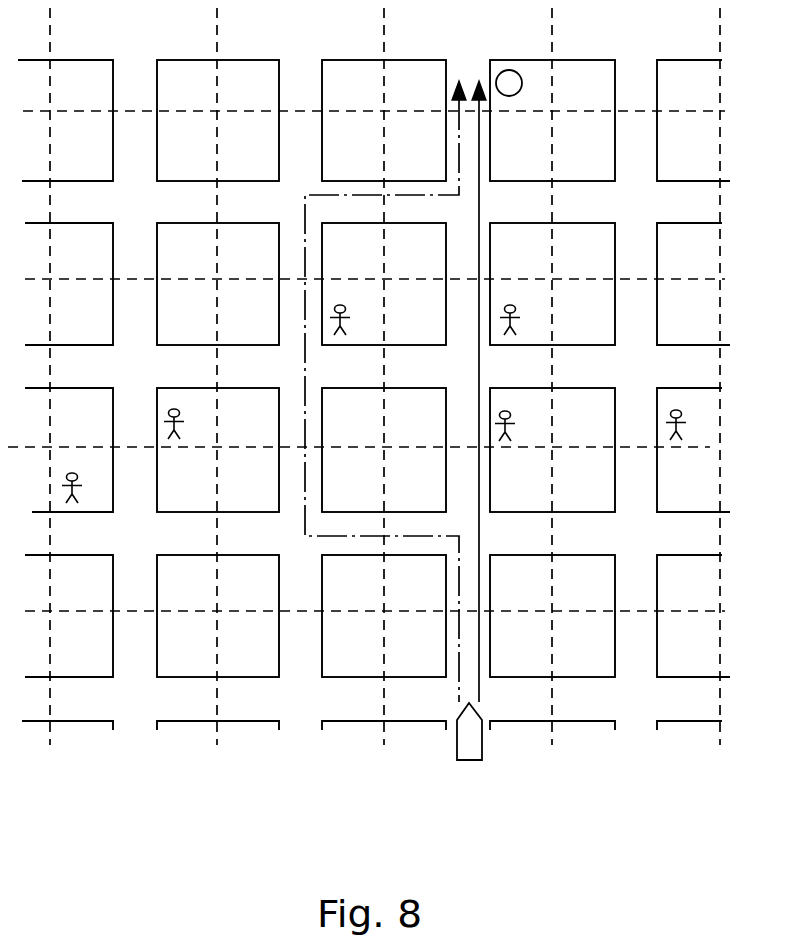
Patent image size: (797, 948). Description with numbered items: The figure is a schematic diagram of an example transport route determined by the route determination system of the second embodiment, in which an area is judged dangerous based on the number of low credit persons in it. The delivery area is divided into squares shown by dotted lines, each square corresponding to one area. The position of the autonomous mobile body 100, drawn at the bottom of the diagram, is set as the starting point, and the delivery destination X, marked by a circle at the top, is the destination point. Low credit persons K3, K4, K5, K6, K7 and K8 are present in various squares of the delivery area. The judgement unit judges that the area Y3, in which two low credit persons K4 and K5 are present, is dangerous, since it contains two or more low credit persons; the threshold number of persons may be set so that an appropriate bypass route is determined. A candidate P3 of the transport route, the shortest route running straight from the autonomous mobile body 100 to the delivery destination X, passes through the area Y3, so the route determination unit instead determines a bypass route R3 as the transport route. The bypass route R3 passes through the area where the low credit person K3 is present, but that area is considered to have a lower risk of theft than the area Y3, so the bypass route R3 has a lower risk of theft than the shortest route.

The delivery destination X is at (518, 72).
The bypass route R3 is at (460, 128).
The candidate of the transport route P3 is at (479, 170).
The low credit person K3 is at (348, 319).
The low credit person K4 is at (518, 319).
The low credit person K5 is at (513, 425).
The low credit person K6 is at (184, 431).
The low credit person K7 is at (83, 484).
The low credit person K8 is at (684, 424).
The area Y3 is at (520, 382).
The autonomous mobile body 100 is at (470, 762).